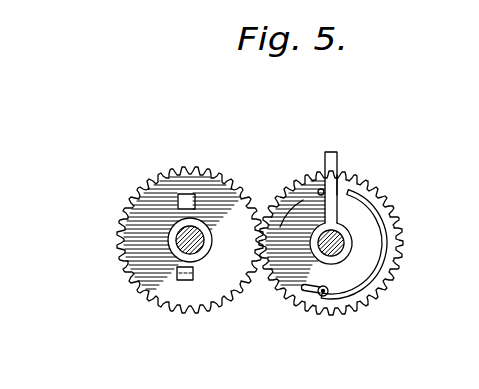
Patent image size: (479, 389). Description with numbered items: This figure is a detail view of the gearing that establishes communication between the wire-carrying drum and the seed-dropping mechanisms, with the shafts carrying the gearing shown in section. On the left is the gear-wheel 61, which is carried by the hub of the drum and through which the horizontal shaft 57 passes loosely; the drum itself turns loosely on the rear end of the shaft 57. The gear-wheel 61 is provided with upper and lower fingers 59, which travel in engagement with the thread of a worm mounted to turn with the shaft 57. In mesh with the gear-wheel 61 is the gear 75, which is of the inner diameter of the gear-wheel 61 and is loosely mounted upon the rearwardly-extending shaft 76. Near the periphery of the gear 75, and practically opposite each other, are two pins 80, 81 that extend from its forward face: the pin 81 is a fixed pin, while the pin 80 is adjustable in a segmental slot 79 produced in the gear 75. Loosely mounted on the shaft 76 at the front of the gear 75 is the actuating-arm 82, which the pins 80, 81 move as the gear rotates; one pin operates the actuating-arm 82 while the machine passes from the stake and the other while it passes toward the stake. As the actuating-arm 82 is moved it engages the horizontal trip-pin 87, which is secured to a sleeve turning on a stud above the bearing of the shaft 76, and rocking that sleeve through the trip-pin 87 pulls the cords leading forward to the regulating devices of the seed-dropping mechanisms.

The horizontal shaft 57 is at (202, 252).
The fingers 59 is at (176, 276).
The gear-wheel 61 is at (151, 183).
The gear 75 is at (404, 253).
The rearwardly-extending shaft 76 is at (323, 245).
The segmental slot 79 is at (374, 212).
The pin 80 is at (322, 296).
The pin 81 is at (319, 189).
The actuating-arm 82 is at (338, 184).
The trip-pin 87 is at (345, 176).